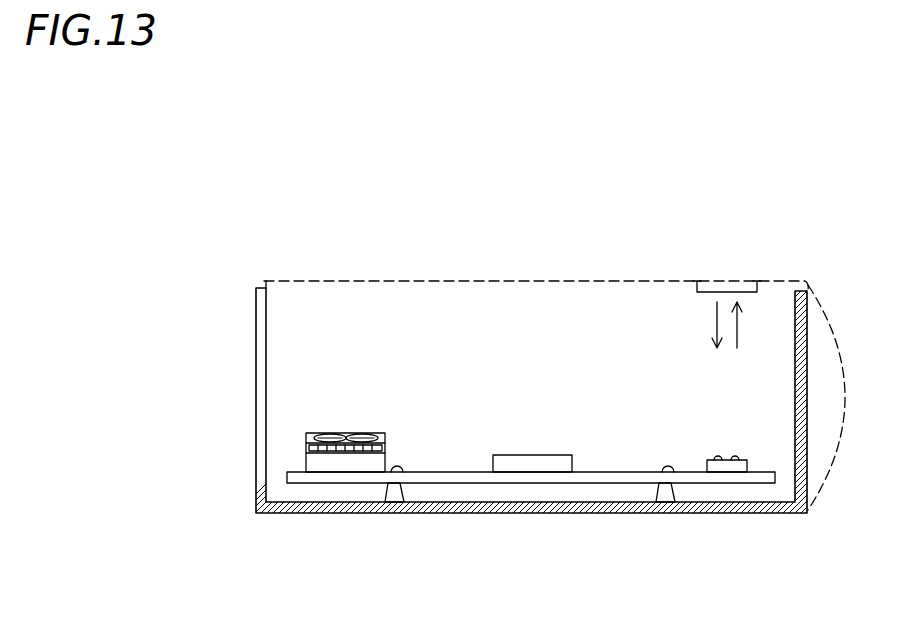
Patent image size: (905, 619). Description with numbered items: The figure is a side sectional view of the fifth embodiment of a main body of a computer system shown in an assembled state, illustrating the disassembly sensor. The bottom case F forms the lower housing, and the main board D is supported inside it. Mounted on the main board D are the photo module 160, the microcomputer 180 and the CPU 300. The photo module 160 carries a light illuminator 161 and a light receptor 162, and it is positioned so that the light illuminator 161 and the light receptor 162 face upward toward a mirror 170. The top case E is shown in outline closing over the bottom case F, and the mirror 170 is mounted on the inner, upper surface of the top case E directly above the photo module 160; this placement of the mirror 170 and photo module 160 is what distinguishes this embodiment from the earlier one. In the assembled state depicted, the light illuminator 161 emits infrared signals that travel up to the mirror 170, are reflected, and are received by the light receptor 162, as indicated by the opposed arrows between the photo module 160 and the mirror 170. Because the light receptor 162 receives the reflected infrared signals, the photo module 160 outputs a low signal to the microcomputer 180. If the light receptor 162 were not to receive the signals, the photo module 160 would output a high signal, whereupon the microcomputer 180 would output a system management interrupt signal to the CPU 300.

The photo module 160 is at (728, 470).
The light illuminator 161 is at (736, 457).
The light receptor 162 is at (716, 457).
The mirror 170 is at (729, 288).
The microcomputer 180 is at (543, 455).
The CPU 300 is at (383, 462).
The main board D is at (522, 483).
The top case E is at (540, 280).
The bottom case F is at (256, 461).